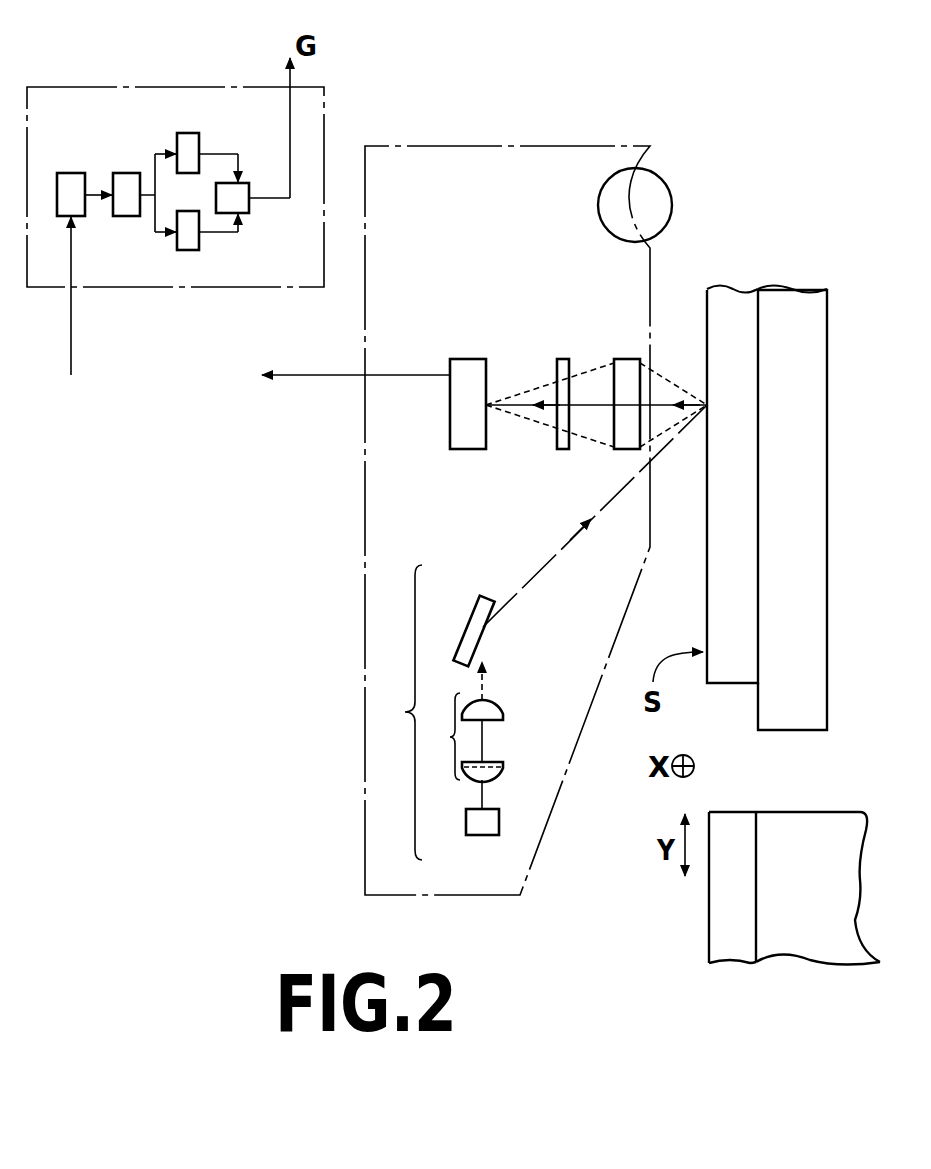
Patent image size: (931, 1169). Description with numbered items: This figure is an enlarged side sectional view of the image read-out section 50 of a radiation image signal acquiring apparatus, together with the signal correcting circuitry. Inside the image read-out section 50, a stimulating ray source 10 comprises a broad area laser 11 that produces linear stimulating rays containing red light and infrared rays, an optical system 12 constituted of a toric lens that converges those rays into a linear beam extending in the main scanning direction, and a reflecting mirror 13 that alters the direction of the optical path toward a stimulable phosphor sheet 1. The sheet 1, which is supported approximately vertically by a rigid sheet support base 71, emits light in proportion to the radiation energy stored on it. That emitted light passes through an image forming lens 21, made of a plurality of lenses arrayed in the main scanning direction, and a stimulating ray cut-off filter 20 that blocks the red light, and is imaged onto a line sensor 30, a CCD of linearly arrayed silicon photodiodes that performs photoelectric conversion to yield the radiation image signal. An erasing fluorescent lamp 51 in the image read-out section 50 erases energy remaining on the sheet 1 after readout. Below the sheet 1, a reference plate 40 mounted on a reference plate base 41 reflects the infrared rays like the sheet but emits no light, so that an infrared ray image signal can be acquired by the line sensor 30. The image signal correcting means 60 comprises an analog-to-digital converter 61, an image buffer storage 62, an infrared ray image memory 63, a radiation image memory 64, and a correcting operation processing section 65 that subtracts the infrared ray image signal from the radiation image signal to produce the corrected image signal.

The stimulable phosphor sheet 1 is at (727, 295).
The stimulating ray source 10 is at (438, 713).
The broad area laser 11 is at (466, 820).
The optical system 12 is at (461, 737).
The reflecting mirror 13 is at (476, 600).
The stimulating ray cut-off filter 20 is at (562, 370).
The image forming lens 21 is at (624, 370).
The line sensor 30 is at (462, 370).
The reference plate 40 is at (742, 825).
The reference plate base 41 is at (840, 825).
The image read-out section 50 is at (365, 598).
The erasing fluorescent lamp 51 is at (658, 190).
The image signal correcting means 60 is at (142, 87).
The analog-to-digital converter 61 is at (70, 183).
The image buffer storage 62 is at (128, 183).
The infrared ray image memory 63 is at (187, 144).
The radiation image memory 64 is at (187, 247).
The correcting operation processing section 65 is at (240, 189).
The sheet support base 71 is at (792, 292).